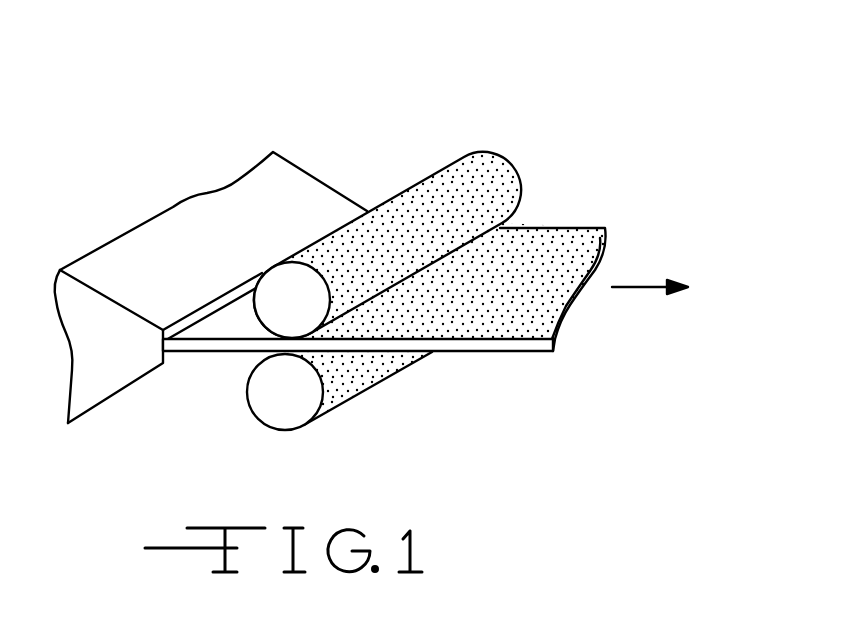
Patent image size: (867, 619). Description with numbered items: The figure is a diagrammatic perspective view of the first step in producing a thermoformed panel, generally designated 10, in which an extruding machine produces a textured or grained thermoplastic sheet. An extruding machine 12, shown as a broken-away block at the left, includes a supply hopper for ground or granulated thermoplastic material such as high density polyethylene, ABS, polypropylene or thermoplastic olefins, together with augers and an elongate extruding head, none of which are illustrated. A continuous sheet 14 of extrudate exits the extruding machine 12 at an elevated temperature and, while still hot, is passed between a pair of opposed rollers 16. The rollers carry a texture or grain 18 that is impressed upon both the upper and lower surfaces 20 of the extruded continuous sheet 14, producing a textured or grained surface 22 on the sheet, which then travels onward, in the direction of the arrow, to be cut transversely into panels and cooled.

The first step in the production of a thermoformed panel 10 is at (400, 113).
The extruding machine 12 is at (148, 245).
The continuous sheet 14 is at (203, 343).
The pair of opposed rollers 16 is at (384, 269).
The texture or grain 18 is at (457, 197).
The upper and lower surfaces 20 is at (238, 307).
The textured or grained surface 22 is at (547, 253).